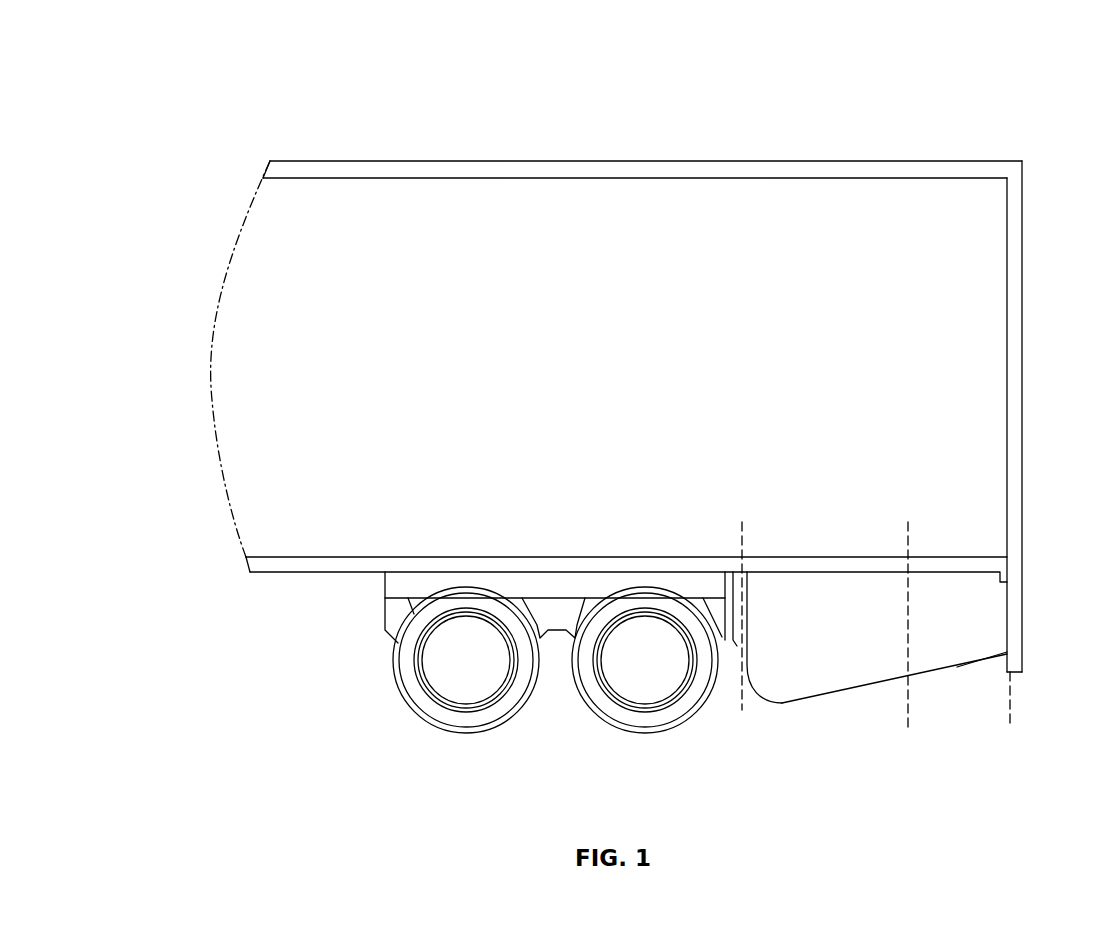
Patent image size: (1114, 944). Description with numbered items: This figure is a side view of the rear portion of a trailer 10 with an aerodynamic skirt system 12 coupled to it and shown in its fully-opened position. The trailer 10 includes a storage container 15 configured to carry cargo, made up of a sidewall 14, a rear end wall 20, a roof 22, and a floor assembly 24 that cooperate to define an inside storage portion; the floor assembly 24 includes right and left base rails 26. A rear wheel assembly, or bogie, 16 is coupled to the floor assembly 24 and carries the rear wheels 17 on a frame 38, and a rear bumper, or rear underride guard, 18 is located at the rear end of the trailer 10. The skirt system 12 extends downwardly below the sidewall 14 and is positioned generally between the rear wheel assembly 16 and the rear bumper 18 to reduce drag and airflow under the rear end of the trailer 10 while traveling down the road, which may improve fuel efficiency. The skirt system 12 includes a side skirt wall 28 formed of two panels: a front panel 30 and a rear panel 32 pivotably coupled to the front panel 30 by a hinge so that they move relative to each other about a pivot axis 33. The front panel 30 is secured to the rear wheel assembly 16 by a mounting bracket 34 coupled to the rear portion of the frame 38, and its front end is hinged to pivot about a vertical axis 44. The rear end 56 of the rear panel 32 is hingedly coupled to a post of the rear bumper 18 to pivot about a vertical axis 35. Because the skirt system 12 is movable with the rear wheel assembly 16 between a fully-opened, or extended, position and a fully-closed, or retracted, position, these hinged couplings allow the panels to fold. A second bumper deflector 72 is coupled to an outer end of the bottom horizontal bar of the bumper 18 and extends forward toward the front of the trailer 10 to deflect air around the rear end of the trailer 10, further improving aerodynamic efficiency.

The trailer 10 is at (220, 116).
The aerodynamic skirt system 12 is at (881, 708).
The sidewall 14 is at (293, 464).
The storage container 15 is at (1030, 380).
The rear wheel assembly 16 is at (372, 607).
The rear wheels 17 is at (641, 720).
The rear bumper 18 is at (1020, 661).
The rear end wall 20 is at (1022, 238).
The roof 22 is at (502, 161).
The floor assembly 24 is at (287, 574).
The base rail 26 is at (260, 566).
The side skirt wall 28 is at (856, 680).
The front panel 30 is at (818, 647).
The rear panel 32 is at (945, 612).
The pivot axis 33 is at (910, 531).
The mounting bracket 34 is at (736, 655).
The vertical axis 35 is at (1012, 712).
The frame 38 is at (549, 588).
The vertical axis 44 is at (745, 531).
The rear end 56 is at (1010, 613).
The second bumper deflector 72 is at (980, 678).